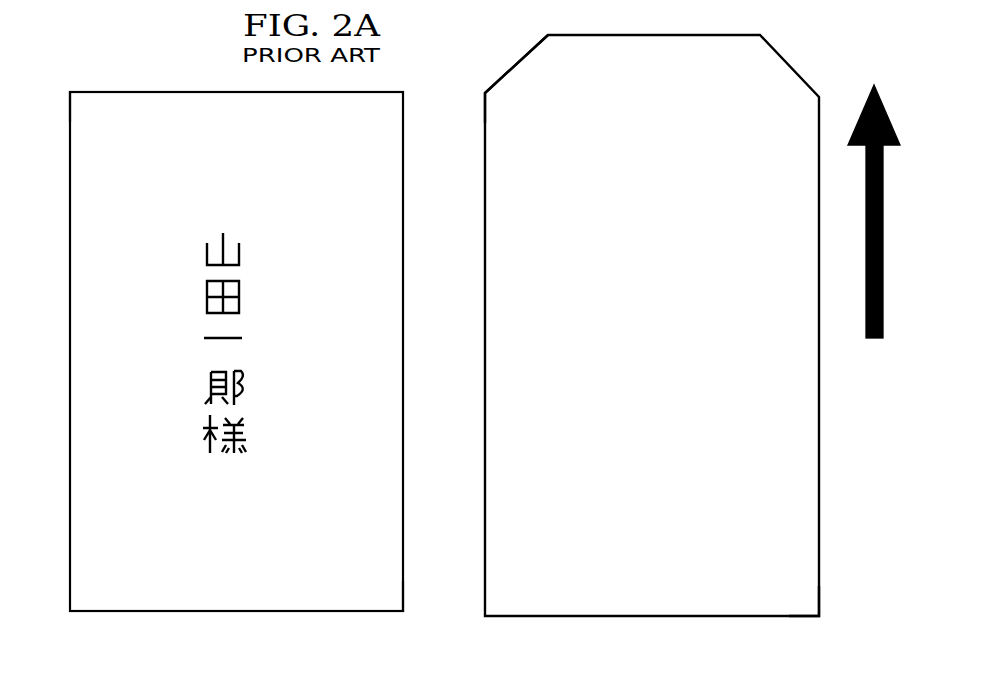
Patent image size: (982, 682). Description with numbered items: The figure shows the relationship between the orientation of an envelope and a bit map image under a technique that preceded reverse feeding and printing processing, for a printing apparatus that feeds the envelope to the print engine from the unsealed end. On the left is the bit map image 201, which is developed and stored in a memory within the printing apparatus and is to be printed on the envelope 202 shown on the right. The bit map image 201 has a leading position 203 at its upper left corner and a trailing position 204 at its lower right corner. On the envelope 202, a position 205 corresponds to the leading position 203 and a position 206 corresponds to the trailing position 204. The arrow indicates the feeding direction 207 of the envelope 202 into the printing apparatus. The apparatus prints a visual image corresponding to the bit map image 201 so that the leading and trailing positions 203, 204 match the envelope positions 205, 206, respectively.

The bit map image 201 is at (70, 494).
The envelope 202 is at (820, 450).
The leading position 203 is at (70, 91).
The trailing position 204 is at (403, 612).
The position 205 is at (485, 92).
The position 206 is at (818, 617).
The feeding direction 207 is at (874, 340).